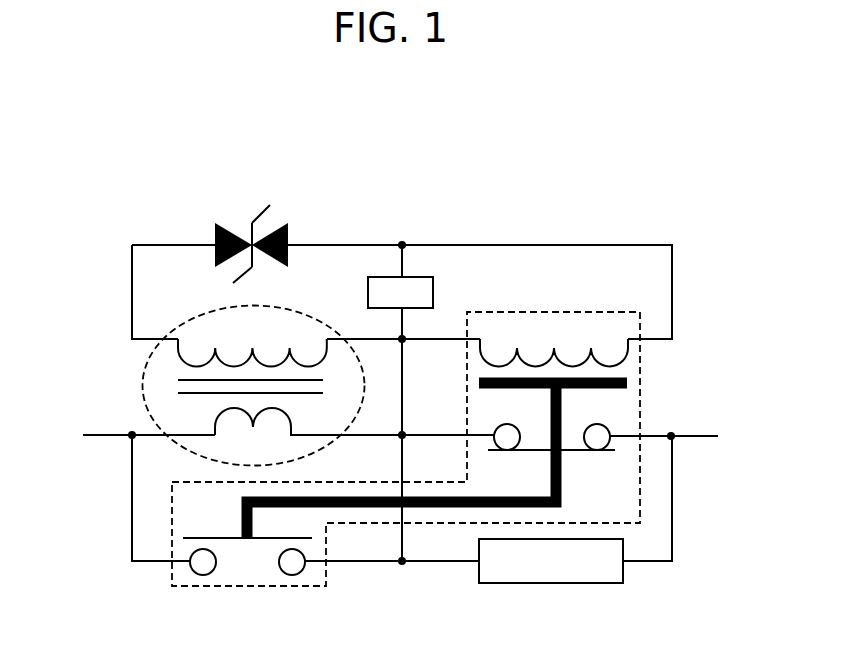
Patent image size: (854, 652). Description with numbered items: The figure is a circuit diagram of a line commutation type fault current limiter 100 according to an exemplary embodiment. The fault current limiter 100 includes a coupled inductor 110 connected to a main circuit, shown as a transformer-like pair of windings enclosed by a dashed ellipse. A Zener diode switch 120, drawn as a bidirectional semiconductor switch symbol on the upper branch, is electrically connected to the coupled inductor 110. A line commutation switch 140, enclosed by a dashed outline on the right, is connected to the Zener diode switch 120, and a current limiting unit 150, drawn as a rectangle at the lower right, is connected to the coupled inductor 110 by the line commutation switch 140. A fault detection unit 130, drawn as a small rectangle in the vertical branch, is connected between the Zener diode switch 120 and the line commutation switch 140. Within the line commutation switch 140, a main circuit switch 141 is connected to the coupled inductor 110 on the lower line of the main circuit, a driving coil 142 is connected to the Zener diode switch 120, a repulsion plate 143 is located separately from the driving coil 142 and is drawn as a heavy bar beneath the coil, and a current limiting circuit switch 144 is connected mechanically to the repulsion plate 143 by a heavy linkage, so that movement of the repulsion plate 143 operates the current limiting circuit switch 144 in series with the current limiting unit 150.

The line commutation type fault current limiter 100 is at (185, 146).
The coupled inductor 110 is at (120, 367).
The Zener diode switch 120 is at (300, 222).
The fault detection unit 130 is at (434, 284).
The line commutation switch 140 is at (590, 312).
The main circuit switch 141 is at (551, 451).
The driving coil 142 is at (554, 341).
The repulsion plate 143 is at (627, 389).
The current limiting circuit switch 144 is at (247, 556).
The current limiting unit 150 is at (575, 585).